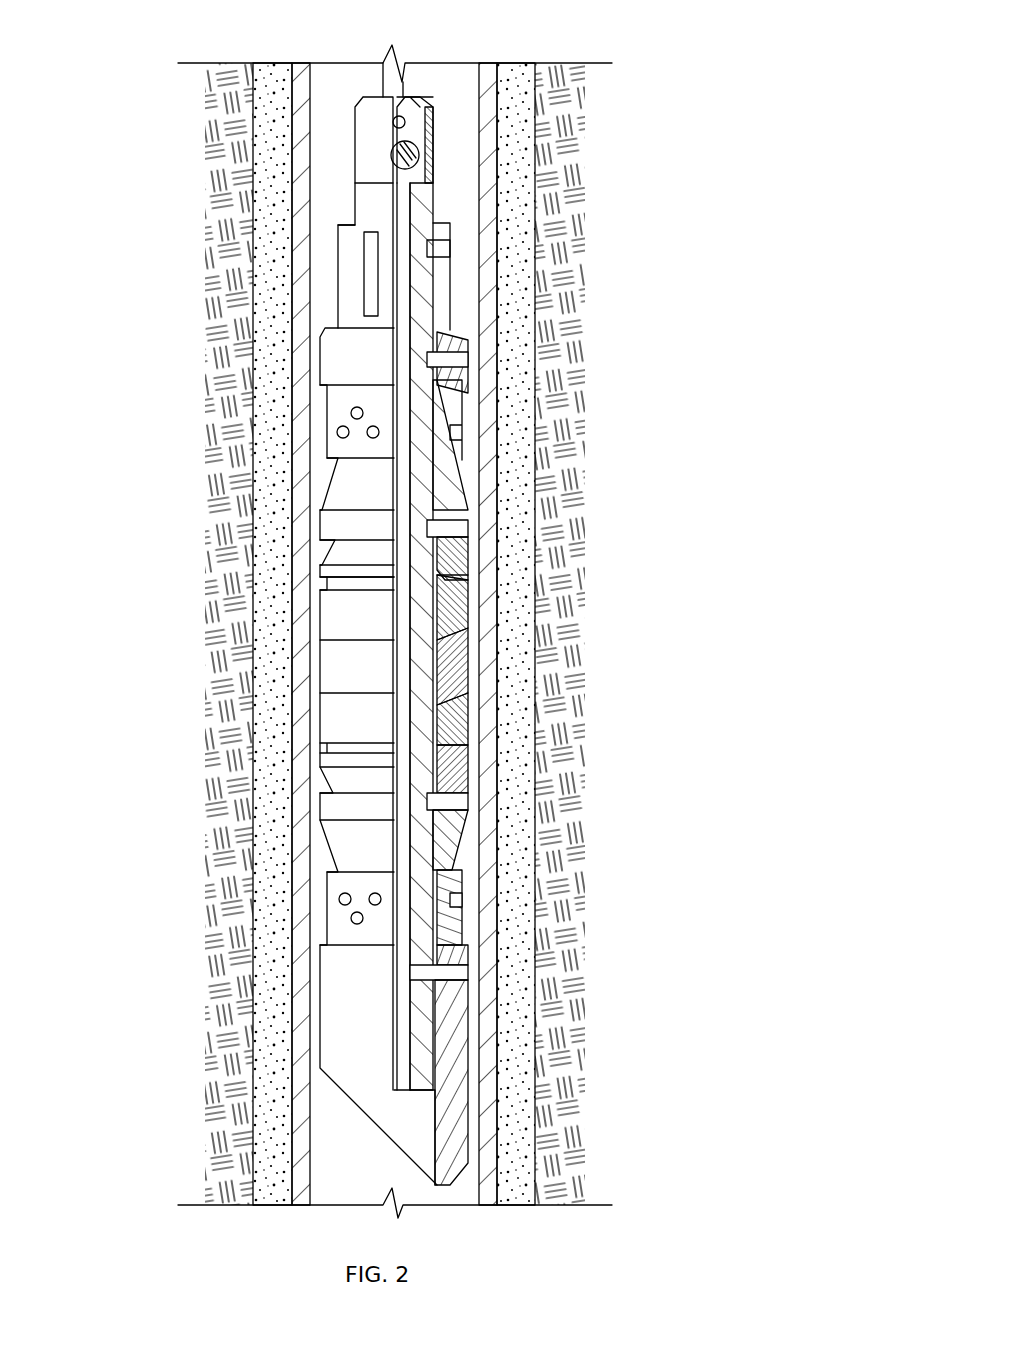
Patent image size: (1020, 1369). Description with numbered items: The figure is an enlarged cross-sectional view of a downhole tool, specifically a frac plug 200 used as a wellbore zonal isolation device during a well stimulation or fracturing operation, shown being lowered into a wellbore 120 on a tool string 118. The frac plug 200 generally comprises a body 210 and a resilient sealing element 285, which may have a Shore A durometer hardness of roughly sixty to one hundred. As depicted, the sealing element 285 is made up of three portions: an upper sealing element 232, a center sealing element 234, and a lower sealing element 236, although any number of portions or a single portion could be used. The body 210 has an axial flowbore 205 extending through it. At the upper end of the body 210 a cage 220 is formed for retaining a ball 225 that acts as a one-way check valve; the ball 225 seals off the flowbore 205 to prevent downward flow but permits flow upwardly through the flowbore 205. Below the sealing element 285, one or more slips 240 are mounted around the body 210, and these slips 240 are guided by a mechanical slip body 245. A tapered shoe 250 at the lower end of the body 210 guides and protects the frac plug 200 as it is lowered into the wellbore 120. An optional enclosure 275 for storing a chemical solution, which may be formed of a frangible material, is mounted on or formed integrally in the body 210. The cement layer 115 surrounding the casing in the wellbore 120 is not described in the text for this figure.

The frac plug 200 is at (466, 36).
The tool string 118 is at (405, 77).
The ball 225 is at (405, 147).
The cage 220 is at (427, 172).
The wellbore 120 is at (330, 177).
The enclosure 275 is at (378, 265).
The body 210 is at (435, 302).
The axial flowbore 205 is at (402, 482).
The upper sealing element 232 is at (457, 610).
The center sealing element 234 is at (457, 668).
The lower sealing element 236 is at (457, 723).
The sealing element 285 is at (605, 660).
The mechanical slip body 245 is at (452, 847).
The slips 240 is at (452, 927).
The cement 115 is at (538, 1020).
The tapered shoe 250 is at (452, 1125).